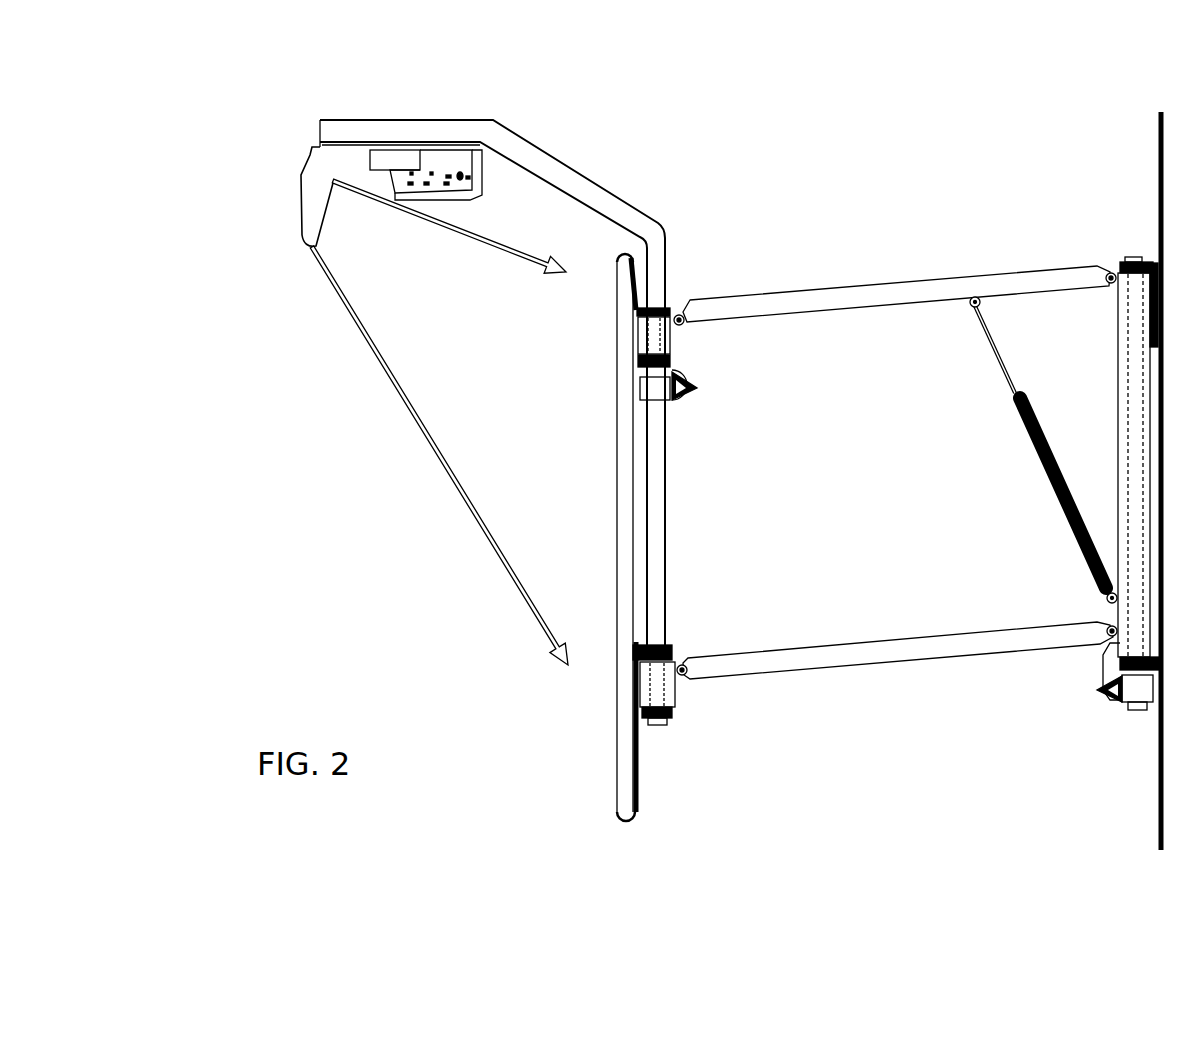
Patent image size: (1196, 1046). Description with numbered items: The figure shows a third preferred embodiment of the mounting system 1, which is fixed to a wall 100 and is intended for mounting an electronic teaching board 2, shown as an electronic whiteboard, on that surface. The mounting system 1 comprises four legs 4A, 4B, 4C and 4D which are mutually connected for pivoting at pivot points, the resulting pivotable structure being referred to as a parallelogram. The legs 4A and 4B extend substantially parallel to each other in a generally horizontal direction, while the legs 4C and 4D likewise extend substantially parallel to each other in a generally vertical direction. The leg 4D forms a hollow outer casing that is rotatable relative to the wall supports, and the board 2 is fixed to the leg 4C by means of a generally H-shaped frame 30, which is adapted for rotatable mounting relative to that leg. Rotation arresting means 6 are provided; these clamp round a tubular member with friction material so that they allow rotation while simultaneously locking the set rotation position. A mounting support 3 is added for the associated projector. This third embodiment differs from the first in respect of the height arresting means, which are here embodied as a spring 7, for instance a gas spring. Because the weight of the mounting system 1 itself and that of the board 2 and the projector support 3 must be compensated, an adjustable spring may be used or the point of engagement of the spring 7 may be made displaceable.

The mounting system 1 is at (900, 160).
The electronic teaching board 2 is at (619, 467).
The mounting support 3 is at (352, 112).
The frame 30 is at (278, 249).
The leg 4A is at (878, 282).
The leg 4B is at (910, 666).
The leg 4C is at (669, 507).
The leg 4D is at (1115, 393).
The rotation arresting means 6 is at (684, 403).
The spring 7 is at (1029, 454).
The wall 100 is at (1156, 160).